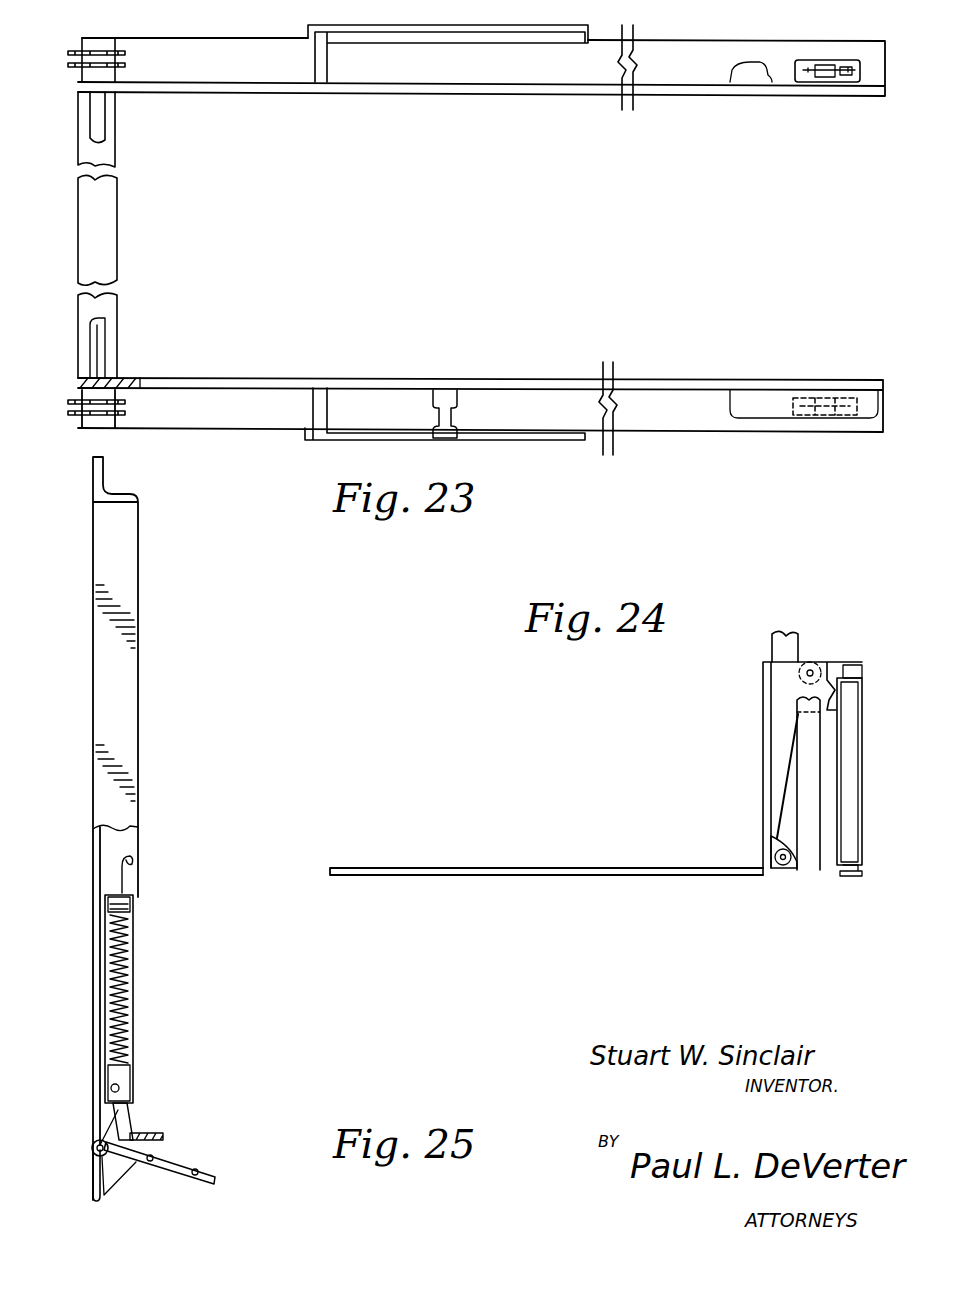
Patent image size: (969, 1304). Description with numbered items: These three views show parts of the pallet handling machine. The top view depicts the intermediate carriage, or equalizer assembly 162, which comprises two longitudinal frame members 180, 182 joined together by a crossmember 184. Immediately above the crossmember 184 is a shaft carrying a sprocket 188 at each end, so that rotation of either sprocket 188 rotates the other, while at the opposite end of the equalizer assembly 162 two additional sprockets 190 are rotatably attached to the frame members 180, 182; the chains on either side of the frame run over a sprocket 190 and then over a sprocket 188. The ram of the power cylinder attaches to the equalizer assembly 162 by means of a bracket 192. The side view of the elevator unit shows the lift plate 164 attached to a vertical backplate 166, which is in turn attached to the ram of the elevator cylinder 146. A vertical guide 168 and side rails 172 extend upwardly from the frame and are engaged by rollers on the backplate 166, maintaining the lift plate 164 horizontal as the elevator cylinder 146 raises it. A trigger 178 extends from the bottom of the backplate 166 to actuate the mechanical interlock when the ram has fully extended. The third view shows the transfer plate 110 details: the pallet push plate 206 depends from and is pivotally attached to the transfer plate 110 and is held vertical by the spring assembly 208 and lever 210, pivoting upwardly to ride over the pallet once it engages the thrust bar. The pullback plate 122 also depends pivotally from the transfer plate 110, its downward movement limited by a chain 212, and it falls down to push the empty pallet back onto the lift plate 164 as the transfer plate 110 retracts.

In FIG. 23, the longitudinal frame member 182 is at (238, 90).
In FIG. 23, the sprocket 188 is at (127, 64).
In FIG. 23, the sprocket 190 is at (845, 82).
In FIG. 23, the crossmember 184 is at (118, 240).
In FIG. 23, the longitudinal frame member 180 is at (518, 380).
In FIG. 23, the bracket 192 is at (446, 392).
In FIG. 23, the equalizer assembly 162 is at (645, 386).
In FIG. 24, the lift plate 164 is at (597, 868).
In FIG. 24, the backplate 166 is at (762, 720).
In FIG. 24, the vertical guide 168 is at (800, 645).
In FIG. 24, the side rail 172 is at (813, 866).
In FIG. 24, the trigger 178 is at (778, 876).
In FIG. 24, the elevator cylinder 146 is at (852, 838).
In FIG. 25, the transfer plate 110 is at (100, 708).
In FIG. 25, the spring assembly 208 is at (135, 985).
In FIG. 25, the lever 210 is at (130, 1112).
In FIG. 25, the chain 212 is at (128, 1131).
In FIG. 25, the pullback plate 122 is at (212, 1186).
In FIG. 25, the pallet push plate 206 is at (90, 1178).